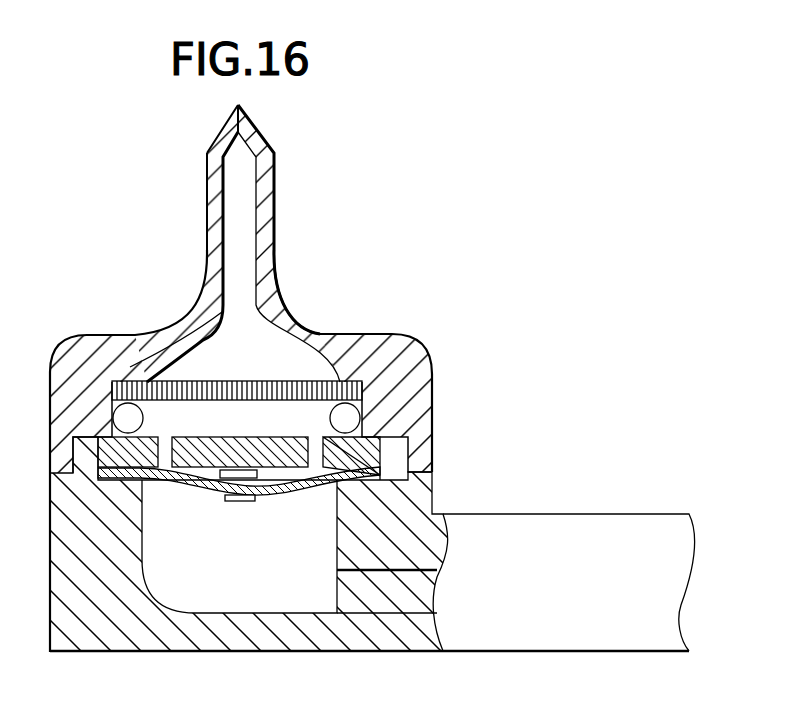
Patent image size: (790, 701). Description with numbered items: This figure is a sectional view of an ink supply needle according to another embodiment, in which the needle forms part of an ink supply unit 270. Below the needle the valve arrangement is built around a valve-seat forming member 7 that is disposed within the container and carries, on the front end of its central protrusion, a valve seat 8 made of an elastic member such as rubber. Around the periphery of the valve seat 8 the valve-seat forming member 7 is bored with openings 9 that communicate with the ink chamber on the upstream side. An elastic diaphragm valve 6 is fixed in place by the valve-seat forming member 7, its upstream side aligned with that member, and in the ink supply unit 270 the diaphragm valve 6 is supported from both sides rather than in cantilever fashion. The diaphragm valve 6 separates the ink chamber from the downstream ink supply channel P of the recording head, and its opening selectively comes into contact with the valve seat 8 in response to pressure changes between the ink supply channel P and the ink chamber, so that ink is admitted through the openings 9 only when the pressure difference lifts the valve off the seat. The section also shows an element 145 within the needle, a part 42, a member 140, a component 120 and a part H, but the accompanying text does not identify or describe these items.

The nozzle passage 145 is at (245, 190).
The ink supply unit 270 is at (270, 228).
The mesh filter 42 is at (193, 383).
The cap 140 is at (260, 430).
The O-ring 120 is at (352, 418).
The opening 9 is at (167, 436).
The valve-seat forming member 7 is at (222, 436).
The diaphragm valve 6 is at (174, 485).
The valve seat 8 is at (252, 502).
The ink supply channel P is at (420, 587).
The housing H is at (627, 522).